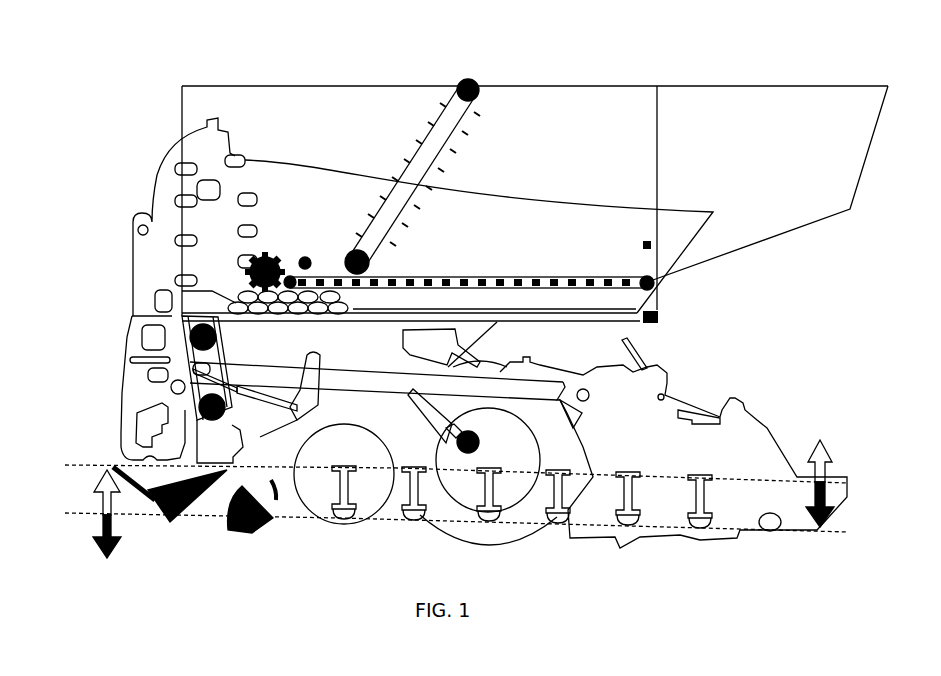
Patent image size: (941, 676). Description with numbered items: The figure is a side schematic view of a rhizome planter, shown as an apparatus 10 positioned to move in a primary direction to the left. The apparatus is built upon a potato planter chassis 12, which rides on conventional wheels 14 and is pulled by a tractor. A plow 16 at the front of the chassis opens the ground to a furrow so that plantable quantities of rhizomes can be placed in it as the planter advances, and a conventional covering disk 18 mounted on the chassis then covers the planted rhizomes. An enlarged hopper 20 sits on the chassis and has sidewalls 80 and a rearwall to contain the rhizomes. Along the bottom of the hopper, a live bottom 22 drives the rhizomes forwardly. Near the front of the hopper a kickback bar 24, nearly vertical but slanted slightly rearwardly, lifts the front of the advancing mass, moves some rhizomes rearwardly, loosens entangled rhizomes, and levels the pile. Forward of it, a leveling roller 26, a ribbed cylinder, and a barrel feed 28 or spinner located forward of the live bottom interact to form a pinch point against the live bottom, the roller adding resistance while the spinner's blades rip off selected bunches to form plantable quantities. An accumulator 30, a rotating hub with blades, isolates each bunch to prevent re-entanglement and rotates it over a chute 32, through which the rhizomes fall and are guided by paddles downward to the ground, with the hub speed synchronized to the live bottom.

The apparatus 10 is at (789, 45).
The chassis 12 is at (360, 512).
The wheels 14 is at (362, 522).
The plow 16 is at (160, 518).
The covering disk 18 is at (253, 533).
The hopper 20 is at (788, 198).
The live bottom 22 is at (590, 280).
The kickback bar 24 is at (452, 82).
The leveling roller 26 is at (308, 257).
The barrel feed 28 is at (275, 256).
The accumulator 30 is at (213, 310).
The chute 32 is at (186, 365).
The sidewalls 80 is at (587, 128).